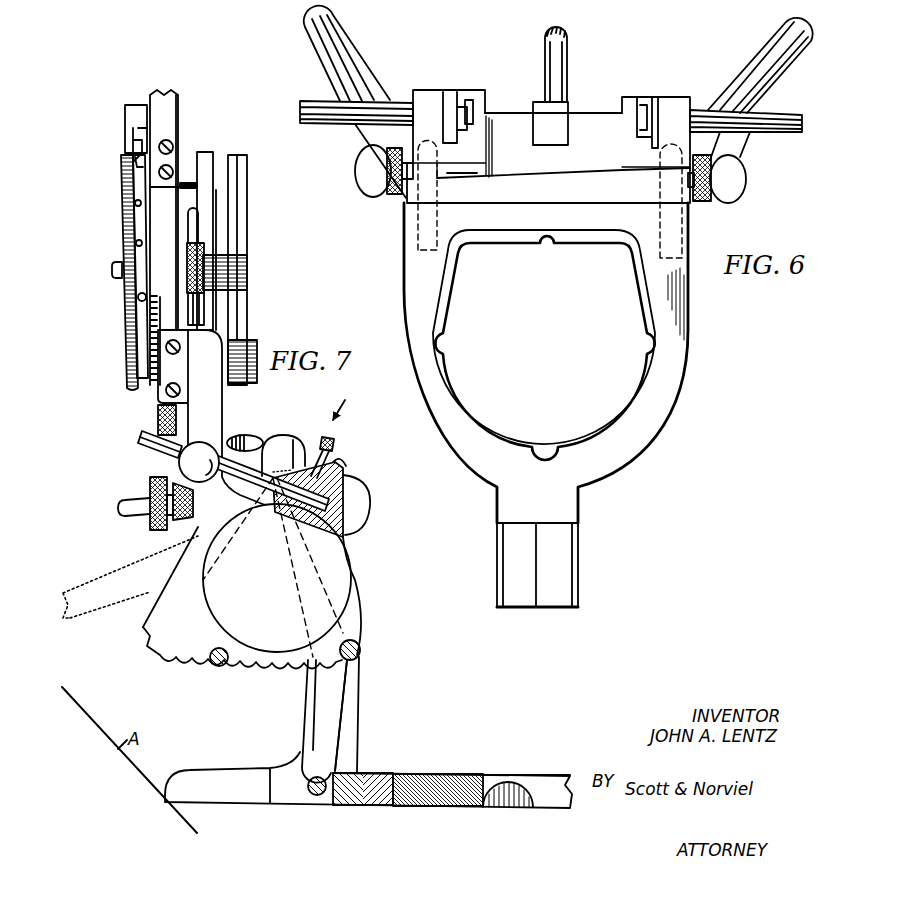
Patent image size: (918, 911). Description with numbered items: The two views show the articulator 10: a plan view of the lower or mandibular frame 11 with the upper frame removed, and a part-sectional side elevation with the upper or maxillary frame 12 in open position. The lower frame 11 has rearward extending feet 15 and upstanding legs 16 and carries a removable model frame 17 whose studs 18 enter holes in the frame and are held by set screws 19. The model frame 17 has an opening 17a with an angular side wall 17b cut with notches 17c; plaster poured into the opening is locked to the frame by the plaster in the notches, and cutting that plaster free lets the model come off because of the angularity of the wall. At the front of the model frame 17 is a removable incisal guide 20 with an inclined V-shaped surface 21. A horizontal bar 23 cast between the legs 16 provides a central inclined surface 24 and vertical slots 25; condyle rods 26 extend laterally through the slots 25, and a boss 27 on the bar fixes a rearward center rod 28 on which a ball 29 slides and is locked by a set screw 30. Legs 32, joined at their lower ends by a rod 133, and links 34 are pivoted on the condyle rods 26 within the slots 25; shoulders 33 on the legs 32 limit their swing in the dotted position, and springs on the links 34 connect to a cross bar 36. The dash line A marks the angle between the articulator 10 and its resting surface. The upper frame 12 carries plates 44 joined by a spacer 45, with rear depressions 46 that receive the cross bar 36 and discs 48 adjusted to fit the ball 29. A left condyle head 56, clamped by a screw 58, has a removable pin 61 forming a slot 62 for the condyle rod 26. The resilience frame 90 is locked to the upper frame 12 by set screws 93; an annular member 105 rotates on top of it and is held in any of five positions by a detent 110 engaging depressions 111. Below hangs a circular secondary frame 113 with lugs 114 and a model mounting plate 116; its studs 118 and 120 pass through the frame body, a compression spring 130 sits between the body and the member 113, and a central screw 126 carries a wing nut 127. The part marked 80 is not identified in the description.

In FIG. 7, the articulator 10 is at (351, 400).
In FIG. 6, the lower or mandibular frame 11 is at (750, 145).
In FIG. 7, the lower or mandibular frame 11 is at (298, 717).
In FIG. 7, the upper or maxillary frame 12 is at (226, 412).
In FIG. 6, the rearward extending feet 15 is at (350, 62).
In FIG. 7, the rearward extending feet 15 is at (203, 771).
In FIG. 6, the upstanding legs 16 is at (440, 180).
In FIG. 7, the upstanding legs 16 is at (351, 727).
In FIG. 6, the removable model frame 17 is at (672, 337).
In FIG. 7, the removable model frame 17 is at (446, 786).
In FIG. 6, the opening 17a is at (557, 367).
In FIG. 6, the angular side wall 17b is at (652, 388).
In FIG. 7, the angular side wall 17b is at (538, 790).
In FIG. 6, the notches 17c is at (553, 241).
In FIG. 7, the notches 17c is at (394, 808).
In FIG. 6, the studs 18 is at (418, 226).
In FIG. 6, the set screws 19 is at (366, 172).
In FIG. 6, the incisal guide 20 is at (580, 554).
In FIG. 6, the inclined V-shaped surface 21 is at (519, 532).
In FIG. 6, the horizontal bar 23 is at (588, 122).
In FIG. 7, the horizontal bar 23 is at (352, 503).
In FIG. 6, the central inclined surface 24 is at (578, 174).
In FIG. 7, the central inclined surface 24 is at (350, 472).
In FIG. 6, the vertical slots 25 is at (466, 106).
In FIG. 6, the condyle rods 26 is at (302, 111).
In FIG. 6, the boss 27 is at (540, 127).
In FIG. 6, the center rod 28 is at (565, 58).
In FIG. 7, the center rod 28 is at (140, 436).
In FIG. 7, the ball 29 is at (180, 468).
In FIG. 7, the set screw 30 is at (194, 508).
In FIG. 6, the legs 32 is at (450, 104).
In FIG. 7, the legs 32 is at (93, 590).
In FIG. 7, the shoulders 33 is at (293, 455).
In FIG. 6, the links 34 is at (466, 100).
In FIG. 7, the cross bar 36 is at (218, 667).
In FIG. 7, the plates 44 is at (352, 598).
In FIG. 7, the spacer 45 is at (361, 650).
In FIG. 7, the depressions 46 is at (178, 643).
In FIG. 7, the discs 48 is at (330, 563).
In FIG. 7, the left condyle head 56 is at (340, 458).
In FIG. 7, the screw 58 is at (122, 506).
In FIG. 7, the removable pin 61 is at (337, 438).
In FIG. 7, the slot 62 is at (298, 466).
In FIG. 7, the knurled collar 80 is at (247, 435).
In FIG. 7, the upper model frame or resilience frame 90 is at (260, 322).
In FIG. 7, the set screws 93 is at (157, 411).
In FIG. 7, the annular member 105 is at (128, 335).
In FIG. 7, the detent 110 is at (127, 124).
In FIG. 7, the depressions 111 is at (136, 242).
In FIG. 7, the circular member or secondary frame 113 is at (207, 160).
In FIG. 7, the lugs 114 is at (225, 276).
In FIG. 7, the model mounting plate 116 is at (243, 199).
In FIG. 7, the stud 118 is at (186, 182).
In FIG. 7, the stud 120 is at (195, 325).
In FIG. 7, the screw 126 is at (112, 272).
In FIG. 7, the wing nut 127 is at (137, 297).
In FIG. 7, the compression spring 130 is at (200, 222).
In FIG. 7, the rod 133 is at (317, 777).